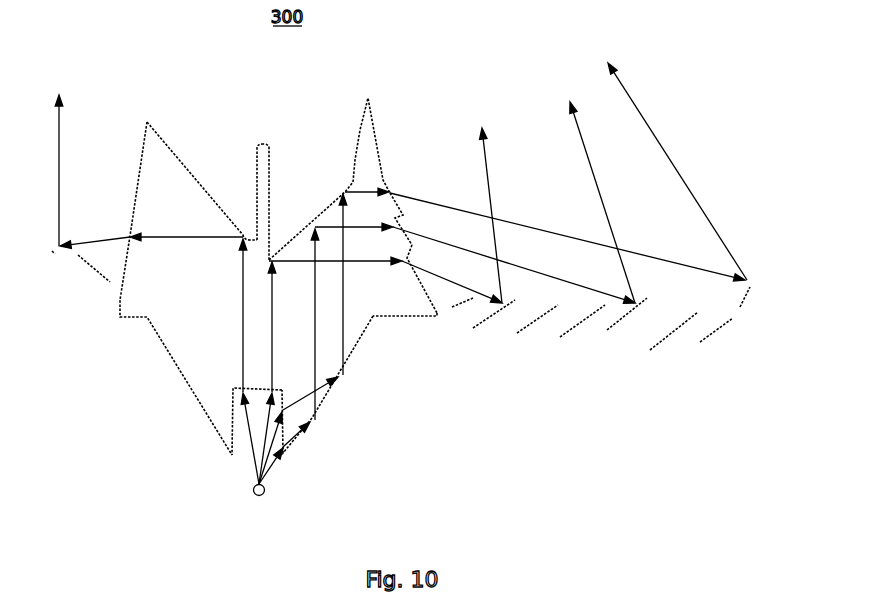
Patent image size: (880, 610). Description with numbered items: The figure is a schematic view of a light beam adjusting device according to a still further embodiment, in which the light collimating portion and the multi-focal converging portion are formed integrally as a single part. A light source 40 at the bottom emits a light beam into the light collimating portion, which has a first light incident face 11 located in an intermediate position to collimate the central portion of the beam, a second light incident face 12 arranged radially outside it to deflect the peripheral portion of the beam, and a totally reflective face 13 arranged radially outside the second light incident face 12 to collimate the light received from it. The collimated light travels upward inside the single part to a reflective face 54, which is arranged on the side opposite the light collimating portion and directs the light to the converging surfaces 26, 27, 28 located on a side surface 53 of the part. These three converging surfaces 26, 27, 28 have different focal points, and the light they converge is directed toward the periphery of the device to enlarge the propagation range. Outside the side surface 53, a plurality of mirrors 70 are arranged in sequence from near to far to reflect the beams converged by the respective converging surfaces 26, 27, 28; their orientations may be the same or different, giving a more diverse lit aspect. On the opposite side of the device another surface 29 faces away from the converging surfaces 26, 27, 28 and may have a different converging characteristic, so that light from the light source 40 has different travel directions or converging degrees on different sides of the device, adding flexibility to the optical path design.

The surface 29 is at (131, 190).
The side surface 53 is at (392, 149).
The reflective face 54 is at (322, 217).
The converging surface 26 is at (388, 180).
The converging surface 27 is at (398, 228).
The converging surface 28 is at (417, 280).
The first light incident face 11 is at (259, 390).
The second light incident face 12 is at (285, 410).
The totally reflective face 13 is at (327, 405).
The light source 40 is at (267, 493).
The mirrors 70 is at (67, 257).